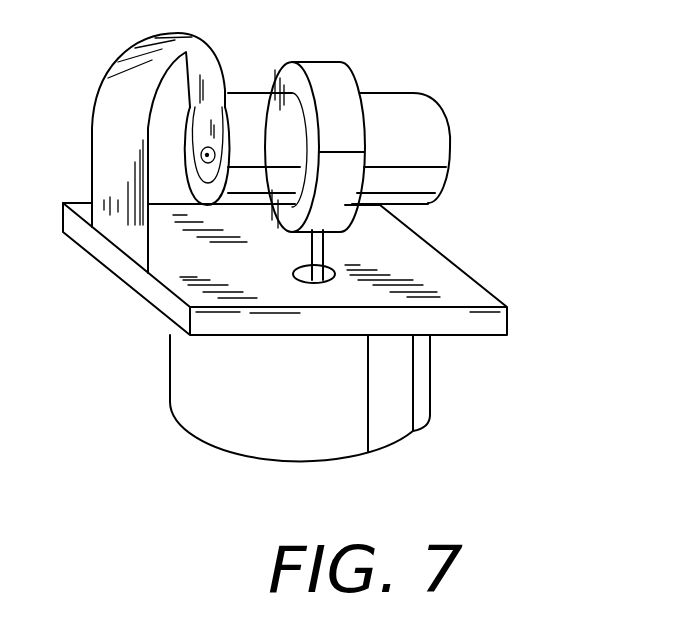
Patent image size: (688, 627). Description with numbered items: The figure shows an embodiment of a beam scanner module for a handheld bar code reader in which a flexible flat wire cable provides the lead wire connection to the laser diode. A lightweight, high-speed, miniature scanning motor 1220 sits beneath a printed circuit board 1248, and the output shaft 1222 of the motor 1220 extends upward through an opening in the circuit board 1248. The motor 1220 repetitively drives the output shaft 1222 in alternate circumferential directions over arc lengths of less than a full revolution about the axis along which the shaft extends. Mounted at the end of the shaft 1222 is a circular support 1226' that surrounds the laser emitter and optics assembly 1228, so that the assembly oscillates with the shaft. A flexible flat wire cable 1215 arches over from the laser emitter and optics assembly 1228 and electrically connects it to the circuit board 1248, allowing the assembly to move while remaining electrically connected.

The flexible flat wire cable 1215 is at (128, 85).
The laser emitter and optics assembly 1228 is at (418, 93).
The circular support 1226' is at (385, 196).
The output shaft 1222 is at (323, 252).
The printed circuit board 1248 is at (480, 318).
The scanning motor 1220 is at (177, 383).